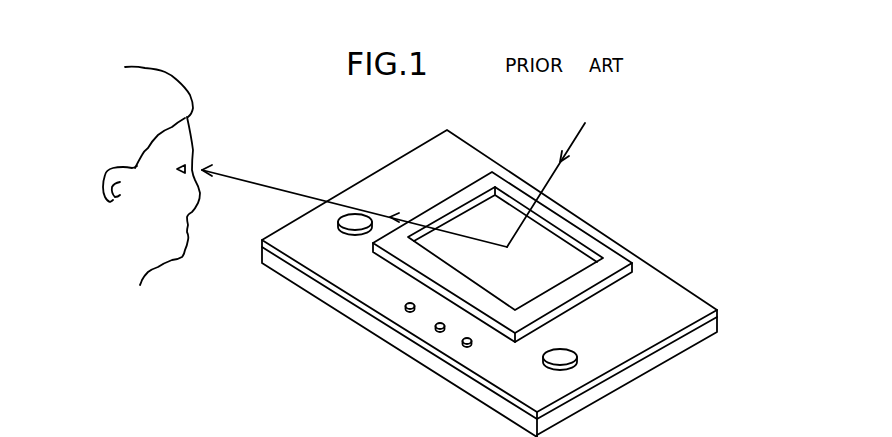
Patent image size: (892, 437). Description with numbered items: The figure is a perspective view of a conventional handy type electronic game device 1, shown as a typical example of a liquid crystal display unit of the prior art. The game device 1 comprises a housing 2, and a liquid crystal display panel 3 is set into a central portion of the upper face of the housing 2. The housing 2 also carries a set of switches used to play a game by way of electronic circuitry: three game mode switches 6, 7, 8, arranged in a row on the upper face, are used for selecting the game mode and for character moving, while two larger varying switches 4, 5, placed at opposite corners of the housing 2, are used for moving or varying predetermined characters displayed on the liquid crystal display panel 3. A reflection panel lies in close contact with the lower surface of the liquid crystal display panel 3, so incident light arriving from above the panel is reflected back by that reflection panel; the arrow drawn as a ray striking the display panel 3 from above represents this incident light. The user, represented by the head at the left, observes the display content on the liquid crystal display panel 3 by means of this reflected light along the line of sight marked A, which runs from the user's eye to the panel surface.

The handy type electronic game device 1 is at (640, 212).
The housing 2 is at (687, 289).
The liquid crystal display panel 3 is at (540, 245).
The varying switch 4 is at (338, 226).
The varying switch 5 is at (573, 357).
The game mode switch 6 is at (406, 312).
The game mode switch 7 is at (436, 332).
The game mode switch 8 is at (464, 347).
The viewing direction of observer A is at (318, 197).